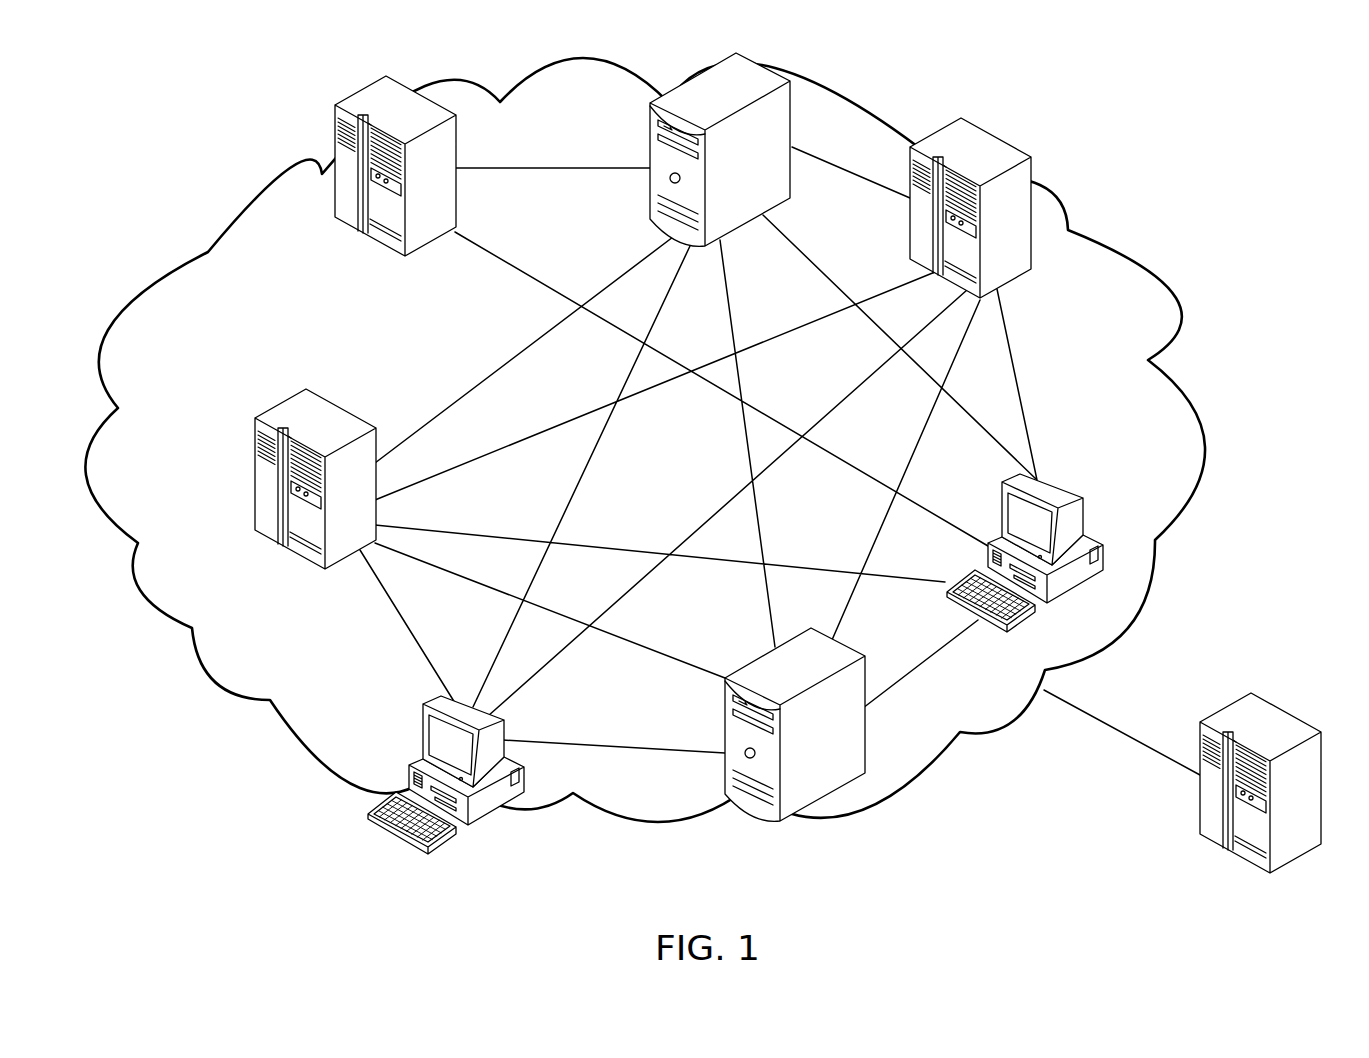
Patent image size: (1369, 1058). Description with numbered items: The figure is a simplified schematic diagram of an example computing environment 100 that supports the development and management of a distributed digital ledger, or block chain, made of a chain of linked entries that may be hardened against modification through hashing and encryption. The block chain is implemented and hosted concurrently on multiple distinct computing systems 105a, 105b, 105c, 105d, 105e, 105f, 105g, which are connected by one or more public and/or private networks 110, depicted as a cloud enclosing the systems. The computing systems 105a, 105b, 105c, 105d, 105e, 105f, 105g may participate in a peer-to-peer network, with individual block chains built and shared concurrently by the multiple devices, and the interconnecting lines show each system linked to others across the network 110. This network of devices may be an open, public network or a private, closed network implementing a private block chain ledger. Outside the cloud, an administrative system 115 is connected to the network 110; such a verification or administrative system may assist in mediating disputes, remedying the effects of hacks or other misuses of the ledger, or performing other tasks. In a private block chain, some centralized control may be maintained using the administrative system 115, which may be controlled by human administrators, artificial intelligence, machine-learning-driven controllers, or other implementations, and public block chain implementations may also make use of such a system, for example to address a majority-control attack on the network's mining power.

The computing environment 100 is at (1232, 158).
The computing system 105a is at (345, 225).
The computing system 105b is at (748, 225).
The computing system 105c is at (1006, 138).
The computing system 105d is at (1068, 480).
The computing system 105e is at (768, 822).
The computing system 105f is at (360, 822).
The computing system 105g is at (265, 540).
The network 110 is at (858, 93).
The administrative system 115 is at (1207, 838).